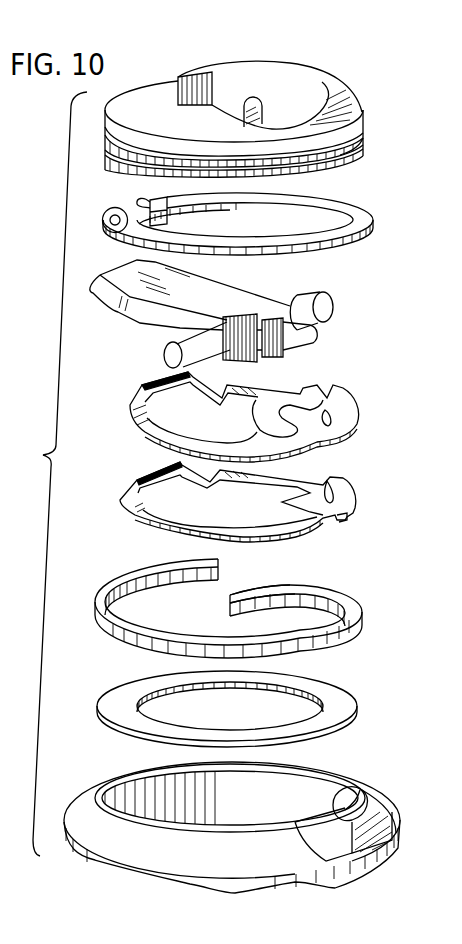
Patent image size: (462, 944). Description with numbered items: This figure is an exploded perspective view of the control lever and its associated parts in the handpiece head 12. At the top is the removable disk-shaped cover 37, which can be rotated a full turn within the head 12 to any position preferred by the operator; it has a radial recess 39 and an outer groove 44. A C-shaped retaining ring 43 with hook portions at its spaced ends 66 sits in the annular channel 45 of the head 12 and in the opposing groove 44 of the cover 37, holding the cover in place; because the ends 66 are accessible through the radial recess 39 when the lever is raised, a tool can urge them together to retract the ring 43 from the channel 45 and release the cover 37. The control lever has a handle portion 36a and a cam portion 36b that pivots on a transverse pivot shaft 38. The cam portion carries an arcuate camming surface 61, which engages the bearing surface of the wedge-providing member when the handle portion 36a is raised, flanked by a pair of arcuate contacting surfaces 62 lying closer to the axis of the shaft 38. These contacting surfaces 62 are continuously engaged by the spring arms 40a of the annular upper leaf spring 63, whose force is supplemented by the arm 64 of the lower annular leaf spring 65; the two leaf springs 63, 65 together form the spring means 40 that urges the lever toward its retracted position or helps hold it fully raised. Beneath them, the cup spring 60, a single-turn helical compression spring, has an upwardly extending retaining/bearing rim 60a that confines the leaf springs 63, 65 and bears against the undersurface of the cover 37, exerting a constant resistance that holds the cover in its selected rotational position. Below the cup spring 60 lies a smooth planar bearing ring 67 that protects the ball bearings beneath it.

The disk-shaped cover 37 is at (273, 113).
The radial recess 39 is at (283, 100).
The groove 44 is at (353, 143).
The retaining ring 43 is at (377, 217).
The spaced ends 66 is at (140, 200).
The handle portion 36a is at (130, 274).
The transverse pivot shaft 38 is at (335, 295).
The arcuate contacting surfaces 62 is at (335, 318).
The cam portion 36b is at (313, 336).
The arcuate camming surface 61 is at (295, 348).
The spring means 40 is at (122, 403).
The annular upper leaf spring 63 is at (358, 424).
The spring arms 40a is at (313, 452).
The arm 64 is at (327, 481).
The lower annular leaf spring 65 is at (357, 505).
The cup spring 60 is at (358, 600).
The retaining/bearing rim 60a is at (316, 588).
The bearing ring 67 is at (360, 698).
The head 12 is at (395, 806).
The annular channel 45 is at (338, 808).